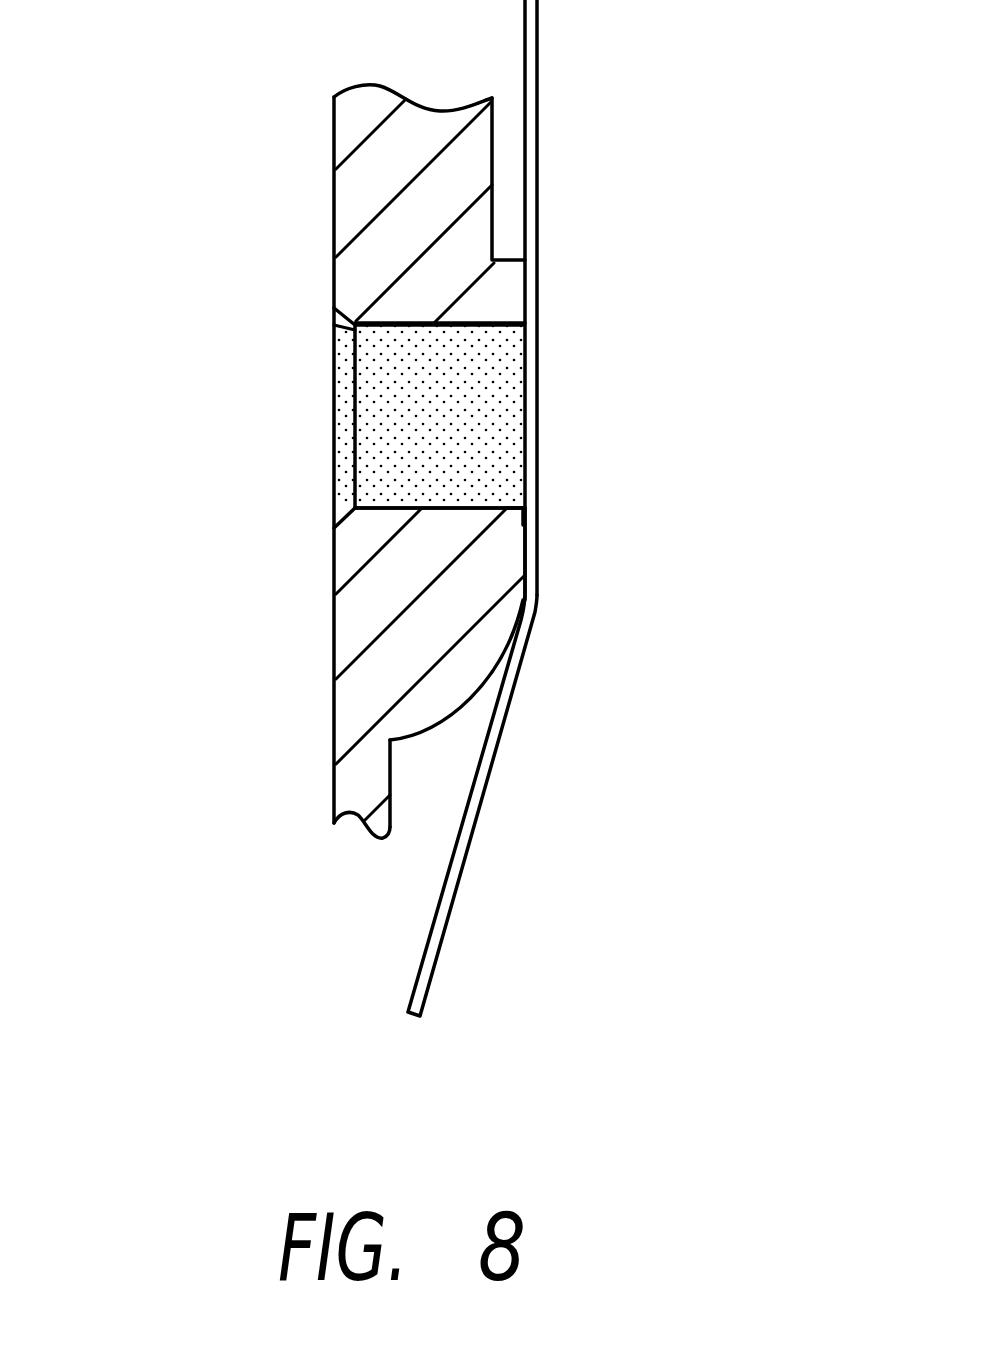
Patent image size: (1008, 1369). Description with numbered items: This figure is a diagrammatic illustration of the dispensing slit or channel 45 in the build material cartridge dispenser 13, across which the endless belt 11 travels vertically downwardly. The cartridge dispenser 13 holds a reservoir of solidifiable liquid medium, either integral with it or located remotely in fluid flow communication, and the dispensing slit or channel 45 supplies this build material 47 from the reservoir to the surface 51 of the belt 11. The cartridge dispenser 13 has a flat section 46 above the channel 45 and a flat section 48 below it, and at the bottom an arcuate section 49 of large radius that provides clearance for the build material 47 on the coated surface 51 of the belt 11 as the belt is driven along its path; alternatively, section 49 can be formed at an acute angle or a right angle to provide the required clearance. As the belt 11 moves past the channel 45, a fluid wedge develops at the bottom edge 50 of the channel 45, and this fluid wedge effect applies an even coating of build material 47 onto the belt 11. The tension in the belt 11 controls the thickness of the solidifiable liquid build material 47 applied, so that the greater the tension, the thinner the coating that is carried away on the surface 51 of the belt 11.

The endless belt 11 is at (447, 920).
The cartridge dispenser 13 is at (334, 128).
The dispensing slit or channel 45 is at (420, 512).
The flat section above the channel 46 is at (537, 285).
The solidifiable liquid build material 47 is at (420, 417).
The flat section below the channel 48 is at (527, 553).
The arcuate section 49 is at (467, 700).
The bottom edge of the channel 50 is at (513, 507).
The surface of the belt 51 is at (523, 380).